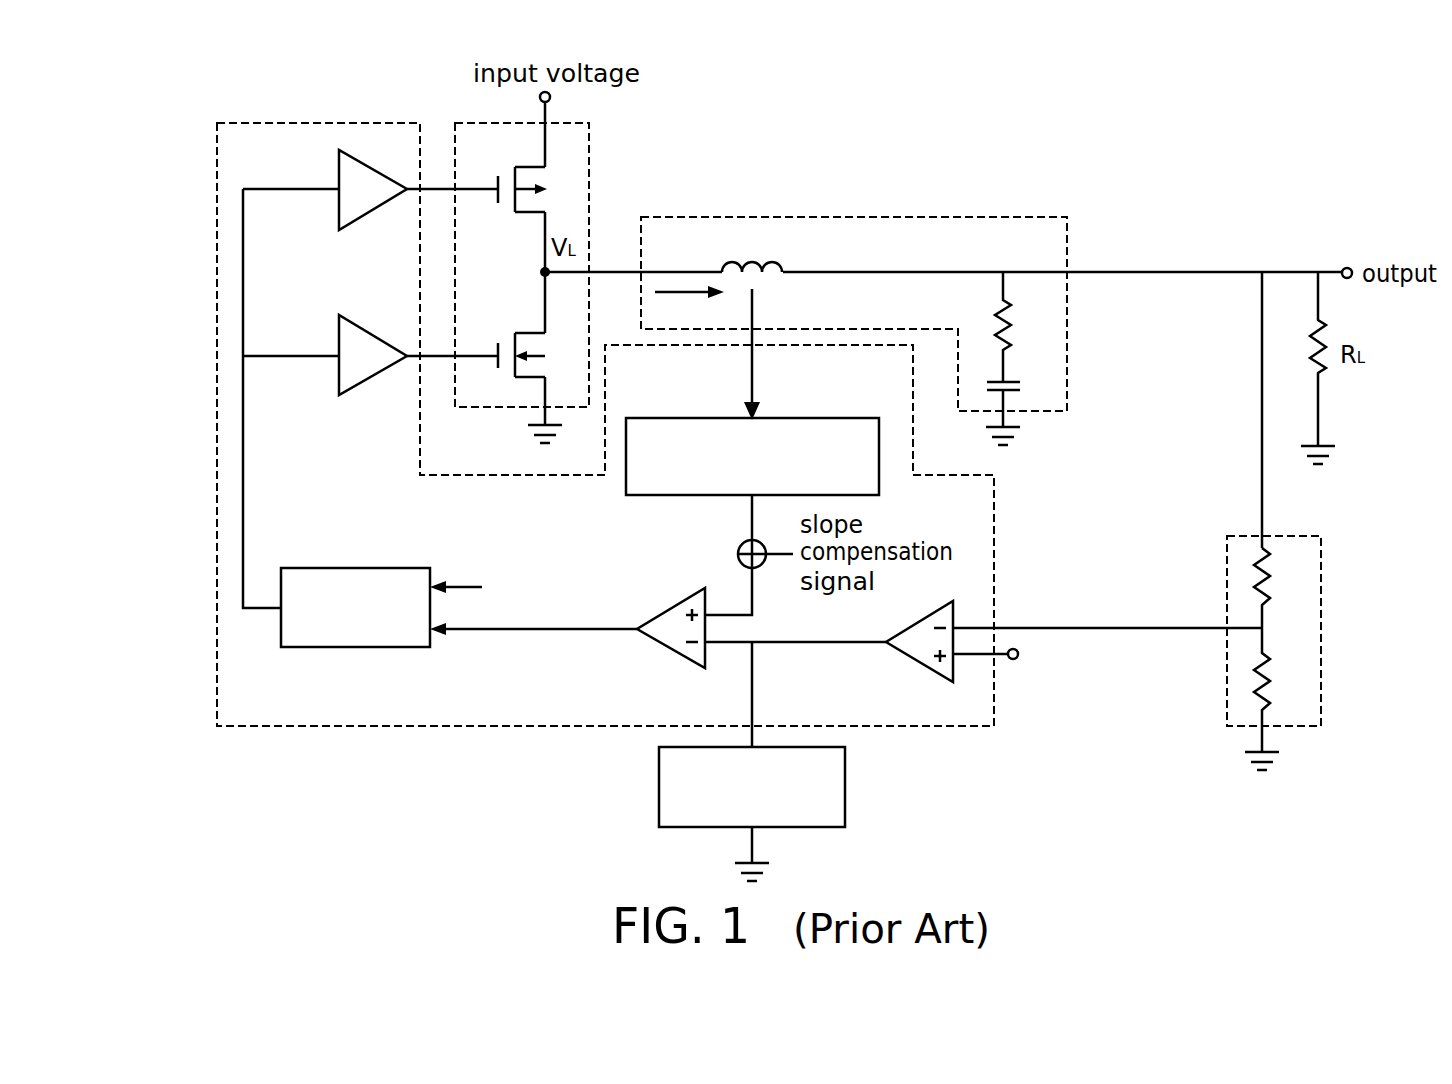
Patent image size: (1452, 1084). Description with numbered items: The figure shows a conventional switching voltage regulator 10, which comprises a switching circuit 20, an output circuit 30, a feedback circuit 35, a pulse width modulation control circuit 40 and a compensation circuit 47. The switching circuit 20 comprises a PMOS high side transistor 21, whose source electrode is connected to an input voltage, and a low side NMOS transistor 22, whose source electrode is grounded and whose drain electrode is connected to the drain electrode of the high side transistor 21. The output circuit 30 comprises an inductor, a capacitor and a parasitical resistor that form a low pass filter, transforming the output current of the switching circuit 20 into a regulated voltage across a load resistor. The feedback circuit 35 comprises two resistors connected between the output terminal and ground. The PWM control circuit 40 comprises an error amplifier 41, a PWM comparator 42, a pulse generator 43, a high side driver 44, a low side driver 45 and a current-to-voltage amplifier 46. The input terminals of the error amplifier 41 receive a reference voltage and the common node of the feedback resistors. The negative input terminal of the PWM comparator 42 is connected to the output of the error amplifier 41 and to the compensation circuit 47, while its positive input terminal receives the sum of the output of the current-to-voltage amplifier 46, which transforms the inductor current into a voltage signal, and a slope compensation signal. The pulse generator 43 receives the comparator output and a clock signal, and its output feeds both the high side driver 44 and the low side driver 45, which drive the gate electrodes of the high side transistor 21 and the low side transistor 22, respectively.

The switching voltage regulator 10 is at (474, 822).
The switching circuit 20 is at (589, 155).
The high side transistor 21 is at (477, 187).
The low side transistor 22 is at (484, 357).
The output circuit 30 is at (773, 217).
The feedback circuit 35 is at (1321, 629).
The pulse width modulation control circuit 40 is at (217, 151).
The error amplifier 41 is at (1012, 649).
The PWM comparator 42 is at (658, 667).
The pulse generator 43 is at (440, 439).
The high side driver 44 is at (325, 179).
The low side driver 45 is at (325, 347).
The current-to-voltage amplifier 46 is at (800, 418).
The compensation circuit 47 is at (845, 787).